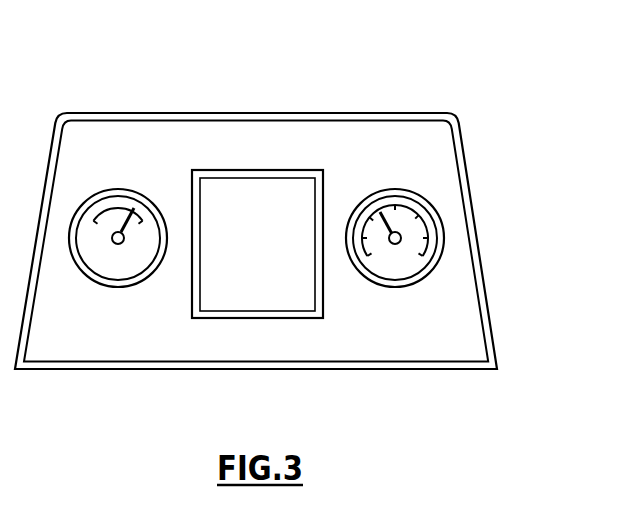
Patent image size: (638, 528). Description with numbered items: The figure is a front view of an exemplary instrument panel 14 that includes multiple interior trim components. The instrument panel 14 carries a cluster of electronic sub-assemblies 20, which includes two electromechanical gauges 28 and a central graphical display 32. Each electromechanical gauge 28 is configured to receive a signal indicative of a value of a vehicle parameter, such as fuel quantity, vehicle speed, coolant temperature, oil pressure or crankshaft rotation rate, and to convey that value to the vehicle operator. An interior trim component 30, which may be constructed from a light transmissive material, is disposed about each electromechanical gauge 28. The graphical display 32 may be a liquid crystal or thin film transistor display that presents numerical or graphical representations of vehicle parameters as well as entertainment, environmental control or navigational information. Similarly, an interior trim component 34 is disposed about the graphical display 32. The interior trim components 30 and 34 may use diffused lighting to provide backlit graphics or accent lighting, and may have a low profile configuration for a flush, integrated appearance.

The instrument panel 14 is at (337, 143).
The cluster of electronic sub-assemblies 20 is at (88, 323).
The electromechanical gauge 28 is at (121, 260).
The interior trim component 30 is at (125, 190).
The graphical display 32 is at (220, 198).
The interior trim component 34 is at (262, 173).